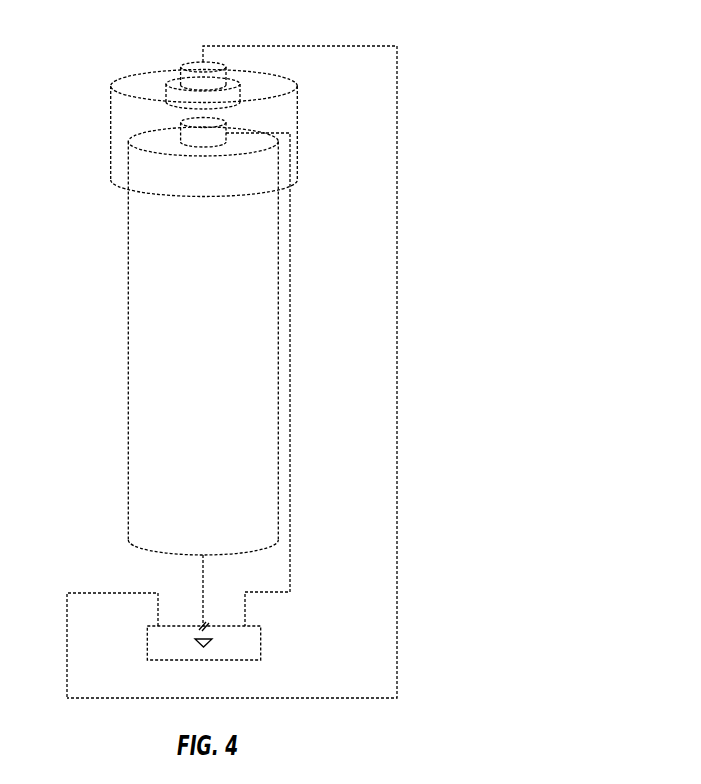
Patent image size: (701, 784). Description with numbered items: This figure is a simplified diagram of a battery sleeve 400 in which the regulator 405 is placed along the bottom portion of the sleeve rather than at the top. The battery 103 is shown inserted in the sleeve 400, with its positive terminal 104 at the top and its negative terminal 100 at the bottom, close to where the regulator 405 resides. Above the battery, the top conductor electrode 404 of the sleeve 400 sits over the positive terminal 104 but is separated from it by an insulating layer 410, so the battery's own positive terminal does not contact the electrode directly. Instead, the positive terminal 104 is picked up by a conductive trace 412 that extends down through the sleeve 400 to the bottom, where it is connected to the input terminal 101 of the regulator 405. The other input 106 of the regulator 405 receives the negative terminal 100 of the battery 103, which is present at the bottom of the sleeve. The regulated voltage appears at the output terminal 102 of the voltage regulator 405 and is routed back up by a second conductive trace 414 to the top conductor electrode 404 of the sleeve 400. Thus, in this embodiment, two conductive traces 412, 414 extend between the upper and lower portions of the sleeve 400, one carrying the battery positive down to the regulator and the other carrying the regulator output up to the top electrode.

The sleeve 400 is at (110, 128).
The top conductor electrode 404 is at (195, 63).
The insulating layer 410 is at (243, 93).
The positive terminal 104 is at (185, 133).
The battery 103 is at (128, 360).
The negative terminal 100 is at (198, 557).
The input 106 is at (203, 592).
The conductive trace 412 is at (292, 280).
The conductive trace 414 is at (395, 317).
The output terminal 102 is at (100, 593).
The input terminal 101 is at (272, 595).
The regulator 405 is at (203, 662).